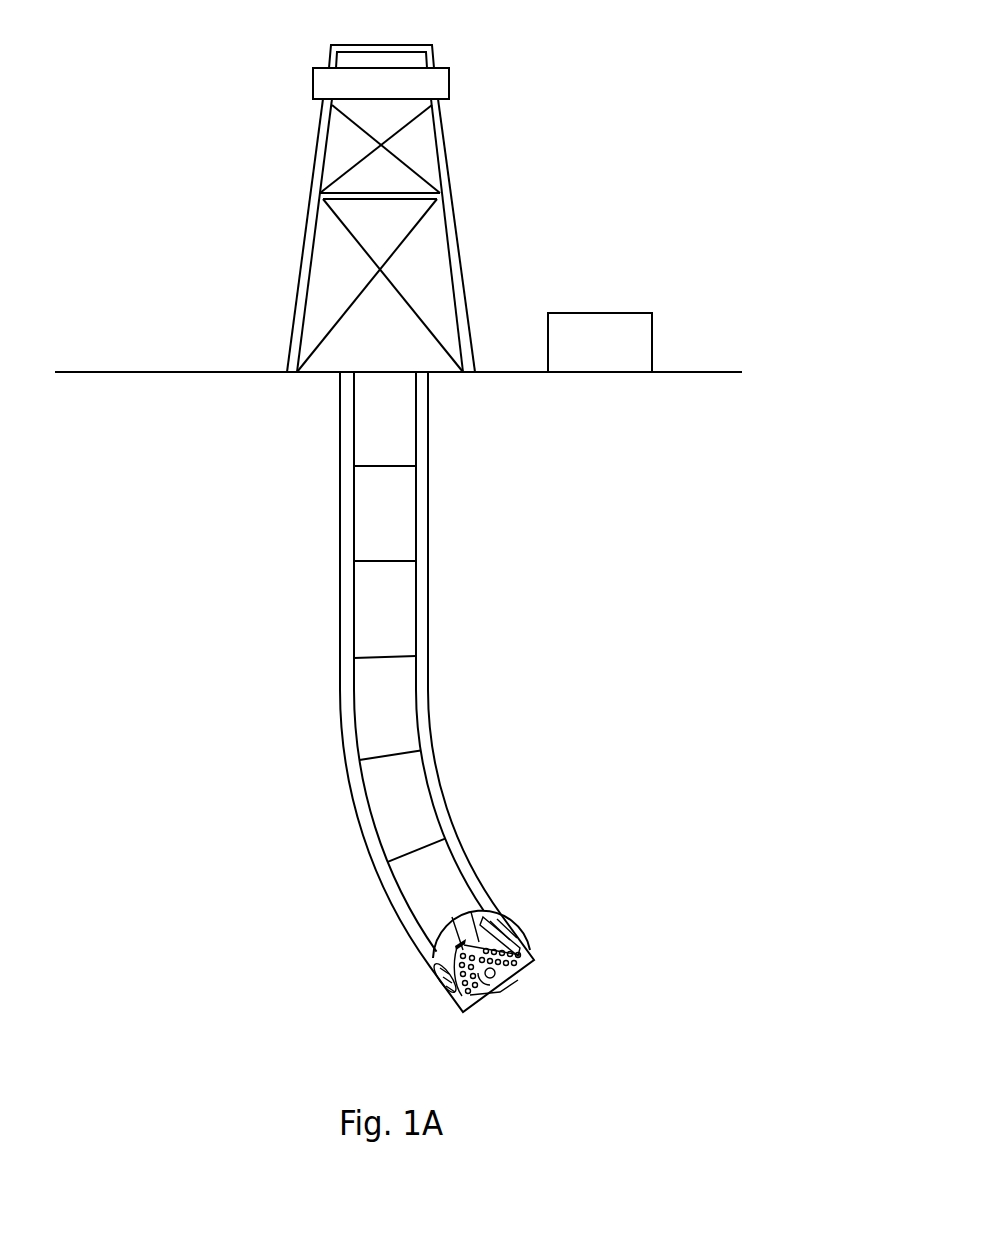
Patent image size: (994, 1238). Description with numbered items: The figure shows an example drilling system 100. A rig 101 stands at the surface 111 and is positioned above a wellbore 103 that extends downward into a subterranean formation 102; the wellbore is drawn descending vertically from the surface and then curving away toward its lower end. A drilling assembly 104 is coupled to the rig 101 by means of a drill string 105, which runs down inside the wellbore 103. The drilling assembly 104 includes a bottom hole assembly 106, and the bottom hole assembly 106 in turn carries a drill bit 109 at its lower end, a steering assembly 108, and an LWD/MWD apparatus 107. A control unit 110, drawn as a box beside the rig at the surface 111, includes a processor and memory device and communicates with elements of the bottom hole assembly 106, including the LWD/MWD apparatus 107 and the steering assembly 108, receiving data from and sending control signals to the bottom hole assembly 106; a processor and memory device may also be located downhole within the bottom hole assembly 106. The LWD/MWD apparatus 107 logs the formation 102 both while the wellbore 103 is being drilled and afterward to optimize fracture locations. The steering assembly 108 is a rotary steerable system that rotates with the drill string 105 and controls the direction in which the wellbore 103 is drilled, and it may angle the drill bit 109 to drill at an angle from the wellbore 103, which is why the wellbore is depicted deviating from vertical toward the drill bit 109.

The drilling system 100 is at (605, 127).
The rig 101 is at (449, 80).
The subterranean formation 102 is at (620, 543).
The wellbore 103 is at (334, 515).
The drilling assembly 104 is at (334, 605).
The drill string 105 is at (417, 583).
The bottom hole assembly (BHA) 106 is at (382, 905).
The LWD/MWD apparatus 107 is at (437, 797).
The steering assembly 108 is at (473, 885).
The drill bit 109 is at (530, 956).
The control unit 110 is at (620, 353).
The surface 111 is at (702, 372).